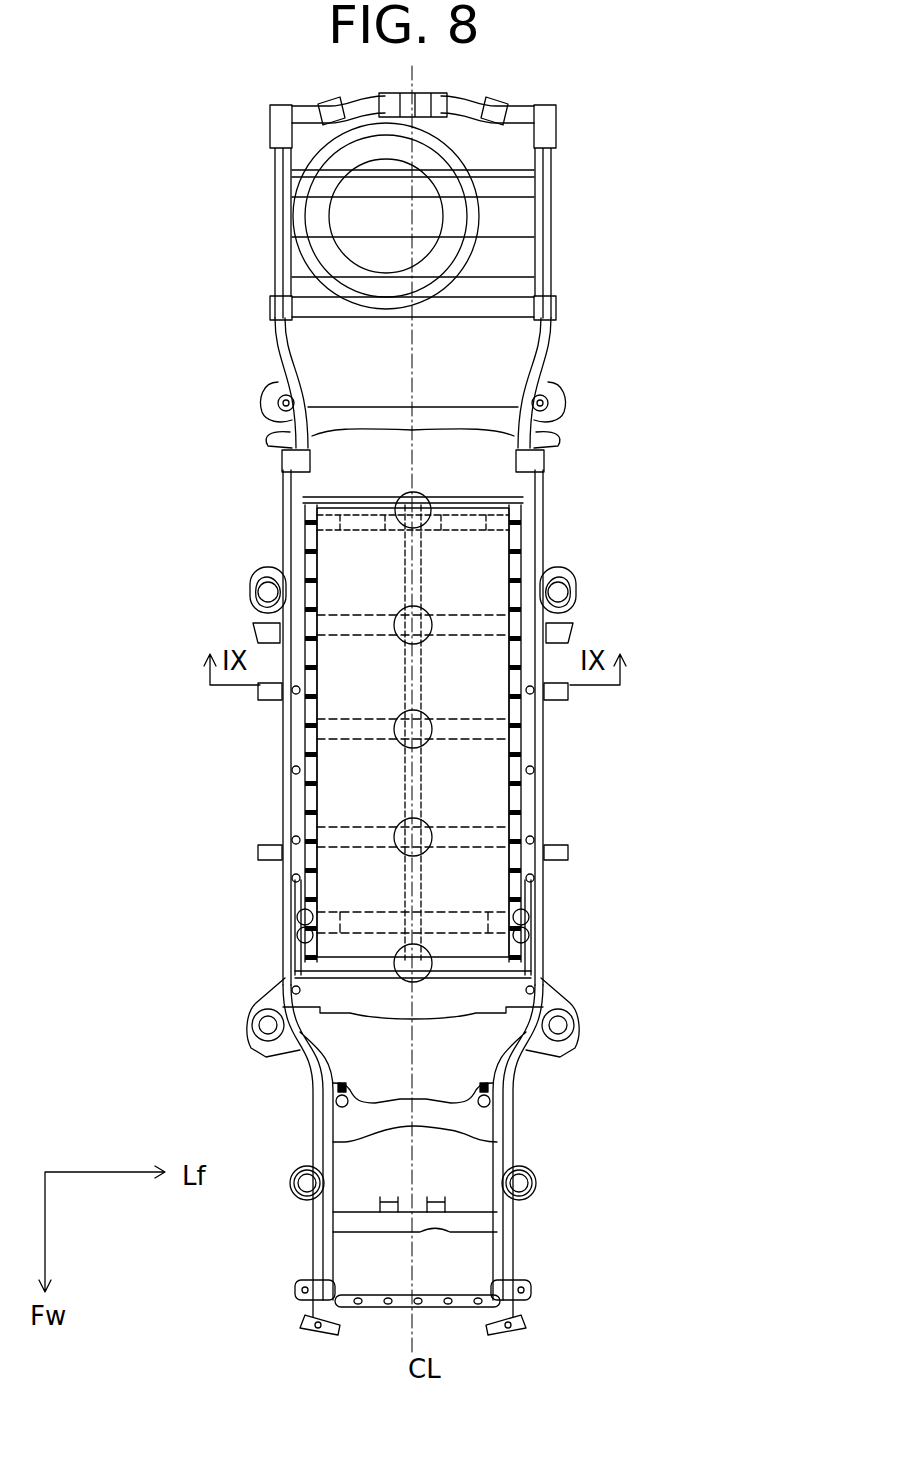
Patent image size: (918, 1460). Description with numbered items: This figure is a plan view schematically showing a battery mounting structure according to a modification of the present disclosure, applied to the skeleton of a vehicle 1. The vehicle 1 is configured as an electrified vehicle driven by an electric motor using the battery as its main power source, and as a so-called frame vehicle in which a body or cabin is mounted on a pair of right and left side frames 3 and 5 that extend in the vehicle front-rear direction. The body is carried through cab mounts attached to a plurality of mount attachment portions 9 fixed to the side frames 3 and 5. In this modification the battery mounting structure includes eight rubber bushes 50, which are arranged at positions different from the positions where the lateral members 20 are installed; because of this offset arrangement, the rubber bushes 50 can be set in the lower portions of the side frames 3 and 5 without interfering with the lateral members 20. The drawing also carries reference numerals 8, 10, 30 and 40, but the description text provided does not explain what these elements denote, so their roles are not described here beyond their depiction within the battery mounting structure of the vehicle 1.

The vehicle 1 is at (203, 445).
The side frame 3 is at (548, 800).
The side frame 5 is at (288, 795).
The front frame portion 8 is at (545, 208).
The mount attachment portion 9 is at (577, 585).
The battery unit 10 is at (470, 870).
The lateral member 20 is at (460, 975).
The support member 30 is at (403, 885).
The fastening portion 40 is at (397, 730).
The rubber bush 50 is at (520, 555).